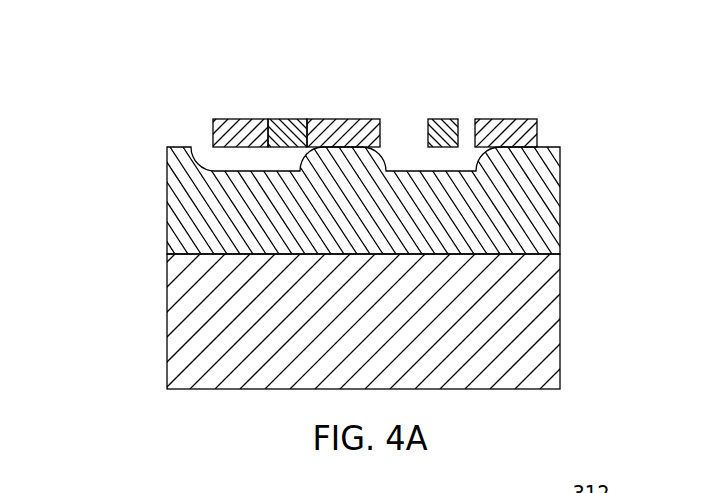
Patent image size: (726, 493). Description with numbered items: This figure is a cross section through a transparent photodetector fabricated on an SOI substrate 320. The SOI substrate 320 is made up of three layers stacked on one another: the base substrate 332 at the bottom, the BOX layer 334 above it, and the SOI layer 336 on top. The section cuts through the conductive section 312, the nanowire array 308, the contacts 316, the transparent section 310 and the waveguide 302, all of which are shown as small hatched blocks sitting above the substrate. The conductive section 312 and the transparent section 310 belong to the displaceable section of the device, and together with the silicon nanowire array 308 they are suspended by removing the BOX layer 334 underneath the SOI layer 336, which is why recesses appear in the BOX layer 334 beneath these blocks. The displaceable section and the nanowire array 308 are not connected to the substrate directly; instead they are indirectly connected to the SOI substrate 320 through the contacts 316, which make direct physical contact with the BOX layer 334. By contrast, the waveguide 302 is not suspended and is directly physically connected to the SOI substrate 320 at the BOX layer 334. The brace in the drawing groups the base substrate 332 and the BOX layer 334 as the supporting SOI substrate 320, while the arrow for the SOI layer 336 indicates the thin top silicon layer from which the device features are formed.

The waveguide 302 is at (507, 130).
The nanowire array 308 is at (285, 118).
The transparent section 310 is at (442, 122).
The conductive section 312 is at (237, 118).
The contacts 316 is at (343, 118).
The SOI substrate 320 is at (350, 268).
The base substrate 332 is at (542, 325).
The BOX layer 334 is at (552, 206).
The SOI layer 336 is at (550, 132).